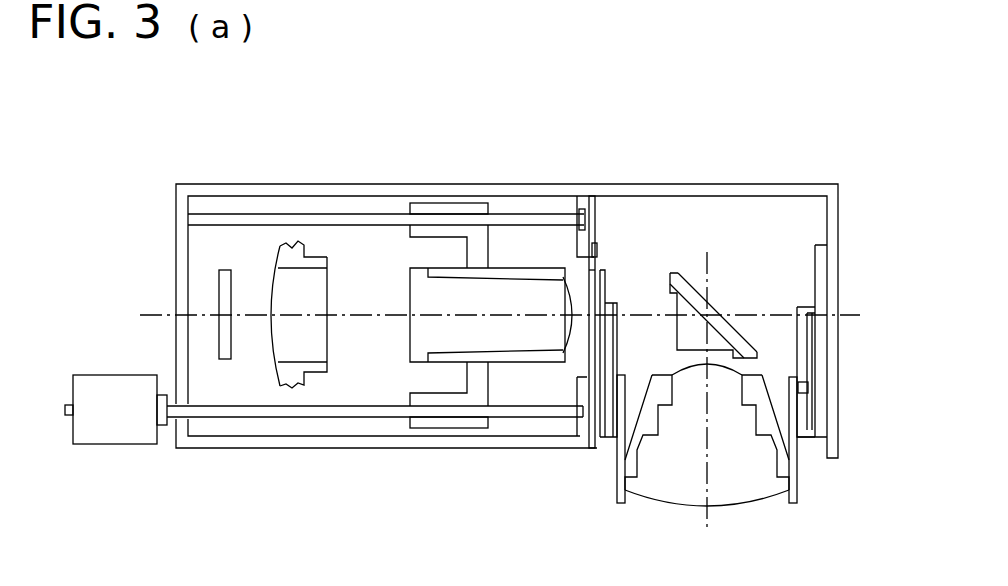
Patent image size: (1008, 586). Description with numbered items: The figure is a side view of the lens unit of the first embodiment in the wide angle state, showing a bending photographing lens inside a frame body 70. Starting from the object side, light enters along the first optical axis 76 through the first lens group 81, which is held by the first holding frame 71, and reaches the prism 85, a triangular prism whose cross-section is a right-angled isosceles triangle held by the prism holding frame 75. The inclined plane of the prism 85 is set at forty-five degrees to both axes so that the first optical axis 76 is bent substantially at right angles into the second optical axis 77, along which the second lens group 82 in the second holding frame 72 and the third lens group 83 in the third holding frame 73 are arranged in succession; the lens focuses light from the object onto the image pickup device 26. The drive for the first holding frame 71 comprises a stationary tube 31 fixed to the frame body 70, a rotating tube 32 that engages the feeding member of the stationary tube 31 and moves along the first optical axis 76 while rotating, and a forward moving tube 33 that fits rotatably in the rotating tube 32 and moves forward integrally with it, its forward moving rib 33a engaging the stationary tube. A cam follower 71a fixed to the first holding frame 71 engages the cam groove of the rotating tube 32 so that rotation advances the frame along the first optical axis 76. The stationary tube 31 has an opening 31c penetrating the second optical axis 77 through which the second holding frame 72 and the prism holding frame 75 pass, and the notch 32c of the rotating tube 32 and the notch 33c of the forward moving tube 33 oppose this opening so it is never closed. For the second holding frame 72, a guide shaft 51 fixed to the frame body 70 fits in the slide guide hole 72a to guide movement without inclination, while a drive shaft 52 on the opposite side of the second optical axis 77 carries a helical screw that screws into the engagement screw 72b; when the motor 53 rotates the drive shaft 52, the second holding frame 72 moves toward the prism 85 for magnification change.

The image pickup device 26 is at (219, 283).
The stationary tube 31 is at (591, 449).
The opening 31c is at (601, 268).
The rotating tube 32 is at (813, 428).
The notch 32c is at (599, 272).
The forward moving tube 33 is at (800, 434).
The forward moving rib 33a is at (820, 311).
The notch 33c is at (618, 303).
The guide shaft 51 is at (328, 222).
The drive shaft 52 is at (344, 418).
The motor 53 is at (120, 435).
The frame body 70 is at (224, 194).
The first holding frame 71 is at (793, 485).
The cam follower 71a is at (817, 386).
The second holding frame 72 is at (441, 270).
The slide guide hole 72a is at (470, 205).
The engagement screw 72b is at (442, 422).
The third holding frame 73 is at (285, 259).
The prism holding frame 75 is at (692, 285).
The first optical axis 76 is at (707, 455).
The second optical axis 77 is at (363, 318).
The first lens group 81 is at (730, 483).
The second lens group 82 is at (433, 300).
The third lens group 83 is at (284, 338).
The prism 85 is at (718, 341).